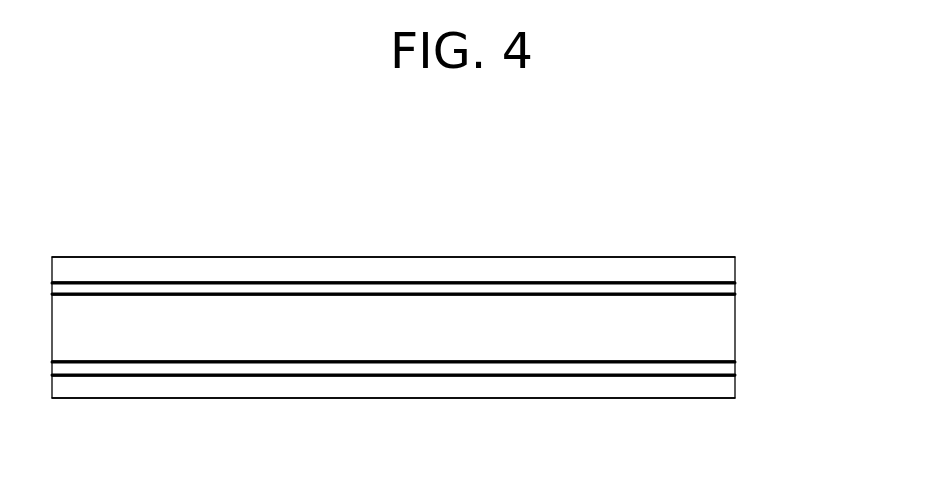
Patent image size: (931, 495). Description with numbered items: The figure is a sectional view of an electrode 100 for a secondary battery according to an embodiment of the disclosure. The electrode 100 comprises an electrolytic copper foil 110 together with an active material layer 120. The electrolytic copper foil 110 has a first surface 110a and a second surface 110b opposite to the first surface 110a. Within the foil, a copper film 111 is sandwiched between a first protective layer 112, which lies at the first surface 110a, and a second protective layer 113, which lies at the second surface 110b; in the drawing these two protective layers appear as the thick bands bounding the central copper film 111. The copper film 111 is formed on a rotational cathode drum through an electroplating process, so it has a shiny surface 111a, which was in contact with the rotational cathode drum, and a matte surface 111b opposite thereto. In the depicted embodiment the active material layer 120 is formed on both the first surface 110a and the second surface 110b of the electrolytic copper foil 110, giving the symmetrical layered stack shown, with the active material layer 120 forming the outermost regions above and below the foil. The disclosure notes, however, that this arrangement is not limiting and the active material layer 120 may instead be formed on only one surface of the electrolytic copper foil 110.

The electrode 100 is at (447, 135).
The electrolytic copper foil 110 is at (815, 279).
The first surface 110a is at (150, 282).
The second surface 110b is at (150, 377).
The copper film 111 is at (727, 328).
The shiny surface 111a is at (275, 295).
The matte surface 111b is at (277, 362).
The first protective layer 112 is at (725, 292).
The second protective layer 113 is at (725, 368).
The active material layer 120 is at (725, 268).